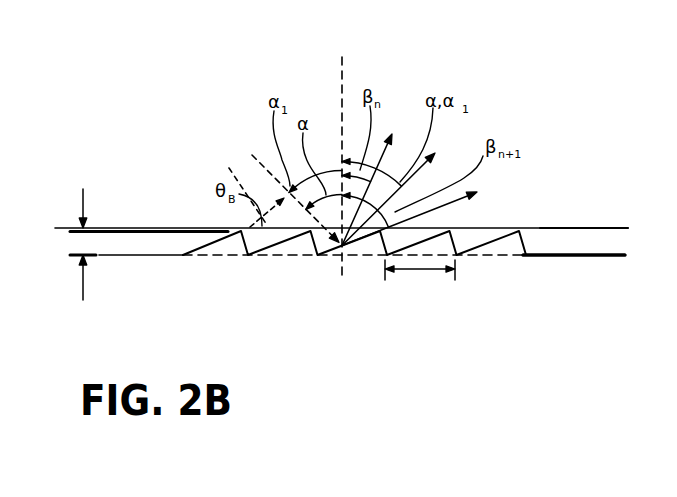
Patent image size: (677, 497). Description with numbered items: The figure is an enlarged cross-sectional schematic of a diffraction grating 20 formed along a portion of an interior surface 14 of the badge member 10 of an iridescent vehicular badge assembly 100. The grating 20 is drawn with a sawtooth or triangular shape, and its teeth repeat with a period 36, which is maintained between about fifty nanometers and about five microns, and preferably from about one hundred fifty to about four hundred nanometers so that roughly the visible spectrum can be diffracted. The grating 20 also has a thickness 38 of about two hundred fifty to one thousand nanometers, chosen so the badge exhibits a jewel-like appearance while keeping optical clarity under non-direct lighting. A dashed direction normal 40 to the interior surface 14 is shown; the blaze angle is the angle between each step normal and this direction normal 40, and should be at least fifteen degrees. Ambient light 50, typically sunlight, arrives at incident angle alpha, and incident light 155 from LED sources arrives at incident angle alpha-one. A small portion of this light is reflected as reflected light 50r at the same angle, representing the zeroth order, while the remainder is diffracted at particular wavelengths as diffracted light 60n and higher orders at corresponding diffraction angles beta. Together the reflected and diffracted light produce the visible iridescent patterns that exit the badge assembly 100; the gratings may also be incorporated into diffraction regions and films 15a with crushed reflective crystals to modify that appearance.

The iridescent vehicular badge assembly 100 is at (229, 91).
The direction normal 40 is at (341, 83).
The diffraction grating 20 is at (537, 118).
The thickness 38 is at (83, 208).
The incident light 155 is at (247, 183).
The ambient light 50 is at (287, 186).
The reflected light 50r is at (403, 189).
The diffracted light 60n is at (379, 179).
The diffraction region and film 15a is at (555, 227).
The badge member 10 is at (613, 208).
The interior surface 14 is at (558, 256).
The period 36 is at (403, 271).